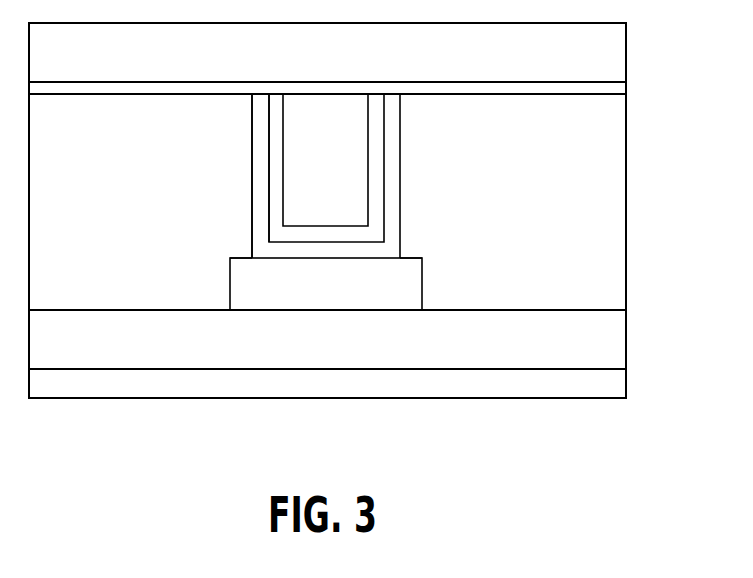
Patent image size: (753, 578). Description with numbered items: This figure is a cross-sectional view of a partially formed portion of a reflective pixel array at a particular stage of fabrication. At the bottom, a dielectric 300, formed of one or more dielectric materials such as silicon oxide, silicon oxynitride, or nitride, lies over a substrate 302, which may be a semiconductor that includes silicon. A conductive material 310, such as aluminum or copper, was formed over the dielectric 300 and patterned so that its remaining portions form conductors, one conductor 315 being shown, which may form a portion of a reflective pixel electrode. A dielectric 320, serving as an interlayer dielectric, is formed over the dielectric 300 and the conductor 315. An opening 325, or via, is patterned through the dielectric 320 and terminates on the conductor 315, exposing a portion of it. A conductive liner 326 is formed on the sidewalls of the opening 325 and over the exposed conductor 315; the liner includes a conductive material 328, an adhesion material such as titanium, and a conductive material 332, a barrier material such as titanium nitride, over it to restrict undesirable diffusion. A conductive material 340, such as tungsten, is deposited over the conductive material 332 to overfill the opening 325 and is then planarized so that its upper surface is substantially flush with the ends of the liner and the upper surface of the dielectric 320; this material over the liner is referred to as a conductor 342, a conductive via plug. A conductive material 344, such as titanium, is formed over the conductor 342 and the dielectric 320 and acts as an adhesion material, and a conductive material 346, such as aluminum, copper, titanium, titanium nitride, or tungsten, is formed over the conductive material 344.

The dielectric 300 is at (577, 341).
The substrate 302 is at (577, 394).
The conductive material 310 is at (235, 278).
The conductor 315 is at (347, 295).
The dielectric 320 is at (520, 261).
The opening 325 is at (253, 110).
The conductive liner 326 is at (260, 175).
The conductive material 328 is at (399, 182).
The conductive material 332 is at (376, 158).
The conductive material 340 is at (298, 198).
The conductor 342 is at (252, 143).
The conductive material 344 is at (617, 85).
The conductive material 346 is at (577, 57).